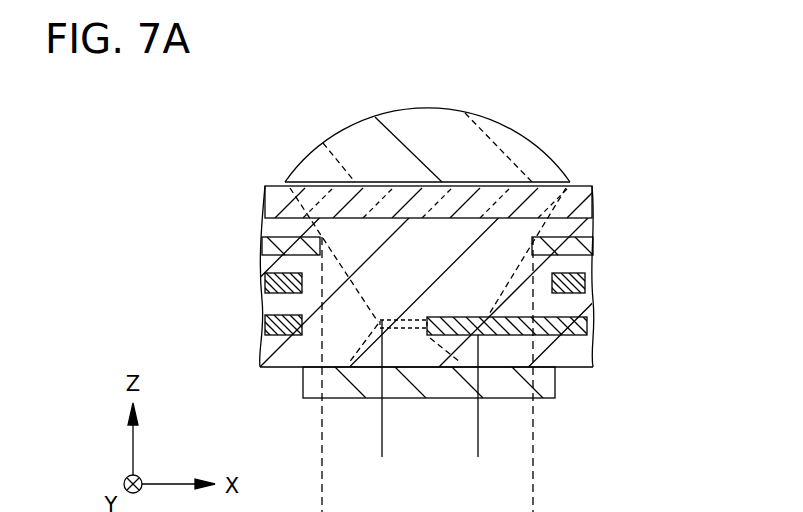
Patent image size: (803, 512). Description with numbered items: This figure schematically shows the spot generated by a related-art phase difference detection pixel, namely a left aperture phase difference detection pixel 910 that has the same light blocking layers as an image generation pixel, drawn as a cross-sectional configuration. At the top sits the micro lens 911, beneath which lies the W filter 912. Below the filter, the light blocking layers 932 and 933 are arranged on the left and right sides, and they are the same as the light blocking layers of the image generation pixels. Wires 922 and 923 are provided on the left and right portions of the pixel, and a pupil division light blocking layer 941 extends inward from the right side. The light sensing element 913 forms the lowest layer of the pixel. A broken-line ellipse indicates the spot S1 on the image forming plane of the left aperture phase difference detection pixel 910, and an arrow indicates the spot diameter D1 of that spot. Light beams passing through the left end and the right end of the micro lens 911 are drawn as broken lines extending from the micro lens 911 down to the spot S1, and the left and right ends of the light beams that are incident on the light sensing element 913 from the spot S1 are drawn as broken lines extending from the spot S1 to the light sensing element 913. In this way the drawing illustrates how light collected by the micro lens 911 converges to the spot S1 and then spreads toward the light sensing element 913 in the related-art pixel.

The left aperture phase difference detection pixel 910 is at (203, 148).
The micro lens 911 is at (372, 118).
The W filter 912 is at (587, 210).
The light sensing element 913 is at (503, 389).
The light blocking layer 932 is at (263, 246).
The light blocking layer 933 is at (588, 248).
The wire 922 is at (250, 268).
The wire 923 is at (605, 268).
The pupil division light blocking layer 941 is at (575, 335).
The spot S1 is at (410, 330).
The spot diameter D1 is at (478, 444).